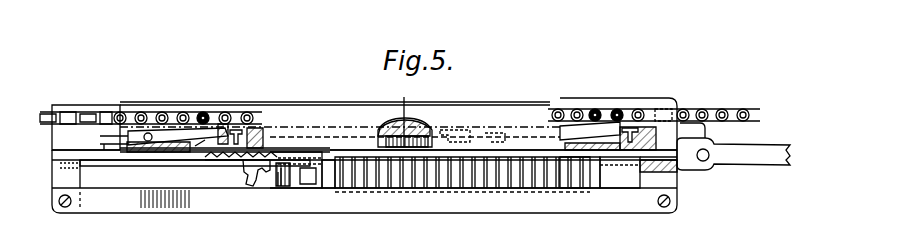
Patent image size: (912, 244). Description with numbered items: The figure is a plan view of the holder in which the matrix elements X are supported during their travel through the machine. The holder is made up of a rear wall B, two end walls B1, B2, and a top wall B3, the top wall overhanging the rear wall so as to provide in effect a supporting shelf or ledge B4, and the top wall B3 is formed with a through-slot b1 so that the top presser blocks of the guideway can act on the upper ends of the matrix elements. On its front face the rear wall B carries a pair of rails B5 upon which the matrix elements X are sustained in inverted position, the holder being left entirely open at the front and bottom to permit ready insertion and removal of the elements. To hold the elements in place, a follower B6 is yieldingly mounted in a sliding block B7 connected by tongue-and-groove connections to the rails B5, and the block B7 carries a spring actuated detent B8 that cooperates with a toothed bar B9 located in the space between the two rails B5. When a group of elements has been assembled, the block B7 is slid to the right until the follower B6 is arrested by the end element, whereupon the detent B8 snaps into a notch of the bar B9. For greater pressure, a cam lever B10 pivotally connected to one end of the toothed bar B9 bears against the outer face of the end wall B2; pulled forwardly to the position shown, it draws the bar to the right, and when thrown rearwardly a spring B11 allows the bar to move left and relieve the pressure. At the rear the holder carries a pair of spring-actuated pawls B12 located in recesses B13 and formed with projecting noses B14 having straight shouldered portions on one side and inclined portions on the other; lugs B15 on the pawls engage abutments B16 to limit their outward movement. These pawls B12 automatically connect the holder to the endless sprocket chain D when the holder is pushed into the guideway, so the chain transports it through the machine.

The rear wall B is at (232, 150).
The end wall B1 is at (73, 186).
The end wall B2 is at (682, 184).
The top wall B3 is at (470, 130).
The supporting shelf or ledge B4 is at (445, 107).
The rails B5 is at (148, 158).
The follower B6 is at (328, 188).
The sliding block B7 is at (308, 158).
The spring actuated detent B8 is at (252, 186).
The toothed bar B9 is at (270, 158).
The cam lever B10 is at (738, 160).
The spring B11 is at (404, 99).
The spring-actuated pawls B12 is at (160, 134).
The recesses B13 is at (190, 150).
The projecting noses B14 is at (206, 126).
The lugs B15 is at (215, 148).
The abutments B16 is at (252, 126).
The endless sprocket chain D is at (126, 116).
The matrix elements X is at (428, 182).
The slot a is at (308, 176).
The through-slot b1 is at (122, 186).